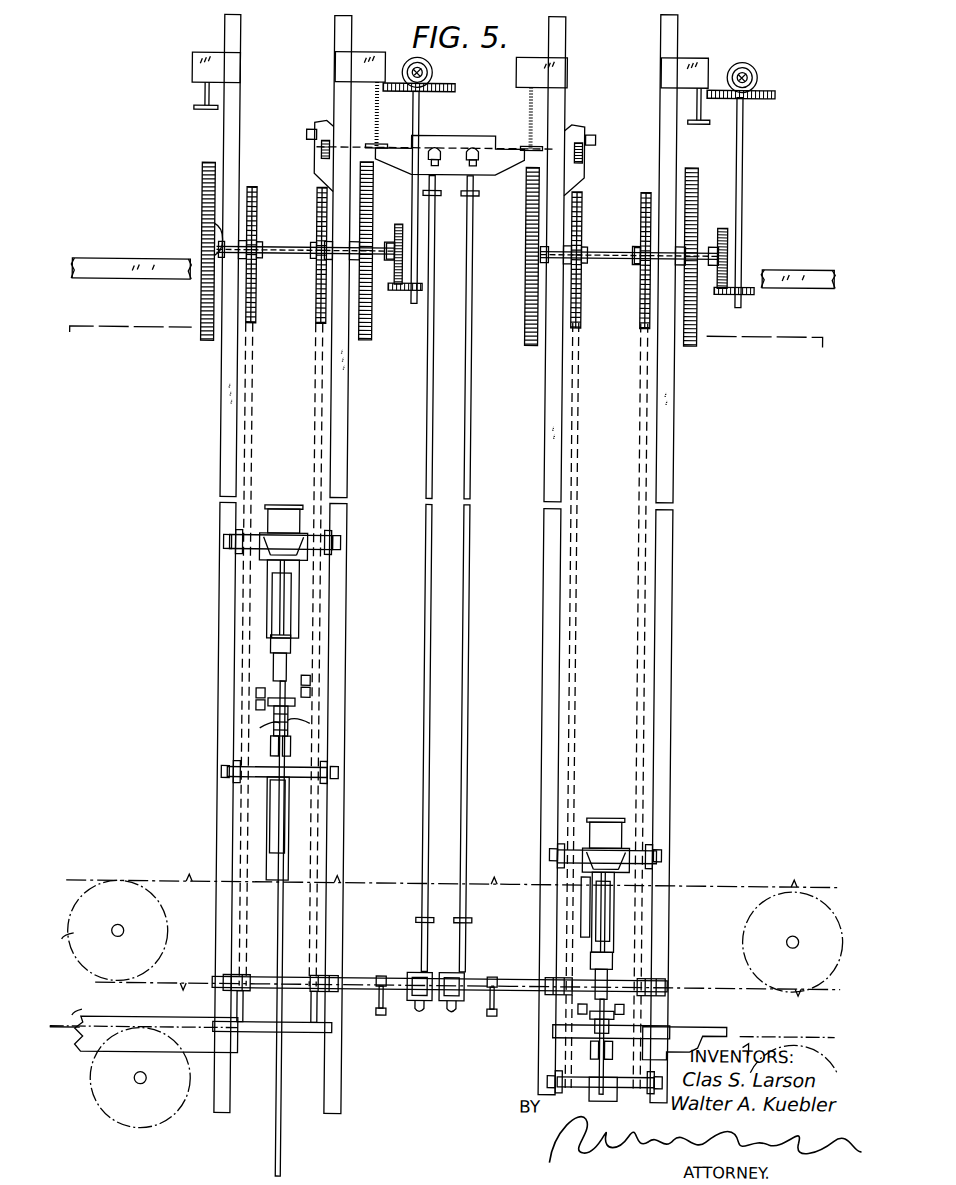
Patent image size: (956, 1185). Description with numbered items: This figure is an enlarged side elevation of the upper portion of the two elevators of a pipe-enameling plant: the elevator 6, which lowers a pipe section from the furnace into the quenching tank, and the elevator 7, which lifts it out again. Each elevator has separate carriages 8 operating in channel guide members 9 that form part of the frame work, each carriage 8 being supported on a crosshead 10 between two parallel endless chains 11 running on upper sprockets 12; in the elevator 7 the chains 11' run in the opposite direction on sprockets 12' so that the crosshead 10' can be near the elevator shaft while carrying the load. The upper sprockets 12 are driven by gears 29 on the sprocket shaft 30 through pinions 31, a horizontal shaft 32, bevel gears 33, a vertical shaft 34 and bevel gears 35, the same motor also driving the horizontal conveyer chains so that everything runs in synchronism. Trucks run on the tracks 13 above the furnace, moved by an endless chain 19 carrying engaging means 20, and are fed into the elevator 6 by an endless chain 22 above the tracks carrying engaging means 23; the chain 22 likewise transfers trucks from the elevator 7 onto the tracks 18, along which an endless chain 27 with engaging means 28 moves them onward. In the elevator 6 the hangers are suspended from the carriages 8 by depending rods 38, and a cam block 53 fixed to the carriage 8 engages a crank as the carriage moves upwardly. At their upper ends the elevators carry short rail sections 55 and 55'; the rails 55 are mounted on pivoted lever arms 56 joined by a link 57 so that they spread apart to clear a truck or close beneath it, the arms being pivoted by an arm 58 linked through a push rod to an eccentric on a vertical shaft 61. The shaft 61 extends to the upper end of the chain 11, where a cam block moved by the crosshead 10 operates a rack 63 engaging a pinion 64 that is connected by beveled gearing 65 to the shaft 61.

The elevator 6 is at (292, 472).
The elevator 7 is at (612, 482).
The carriage 8 is at (268, 616).
The channel guide member 9 is at (221, 441).
The crosshead 10 is at (260, 729).
The crosshead 10' is at (605, 1053).
The endless chain 11 is at (281, 655).
The endless chain 11' is at (606, 708).
The upper sprocket 12 is at (286, 255).
The upper sprocket 12' is at (611, 260).
The track 13 is at (226, 1022).
The track 18 is at (700, 1026).
The endless chain 19 is at (68, 1024).
The engaging means 20 is at (180, 1043).
The endless chain 22 is at (228, 979).
The engaging means 23 is at (194, 876).
The endless chain 27 is at (828, 1036).
The engaging means 28 is at (776, 1038).
The gear 29 is at (199, 180).
The sprocket shaft 30 is at (212, 224).
The pinion 31 is at (206, 246).
The horizontal shaft 32 is at (294, 261).
The bevel gear 33 is at (392, 285).
The vertical shaft 34 is at (417, 115).
The bevel gear 35 is at (432, 82).
The depending rod 38 is at (282, 1097).
The cam block 53 is at (292, 872).
The short rail section 55 is at (271, 1045).
The short rail section 55' is at (582, 1044).
The pivoted lever arm 56 is at (316, 1003).
The link 57 is at (381, 1010).
The arm 58 is at (459, 1003).
The vertical shaft 61 is at (468, 700).
The rack 63 is at (318, 127).
The pinion 64 is at (318, 153).
The beveled gearing 65 is at (432, 156).